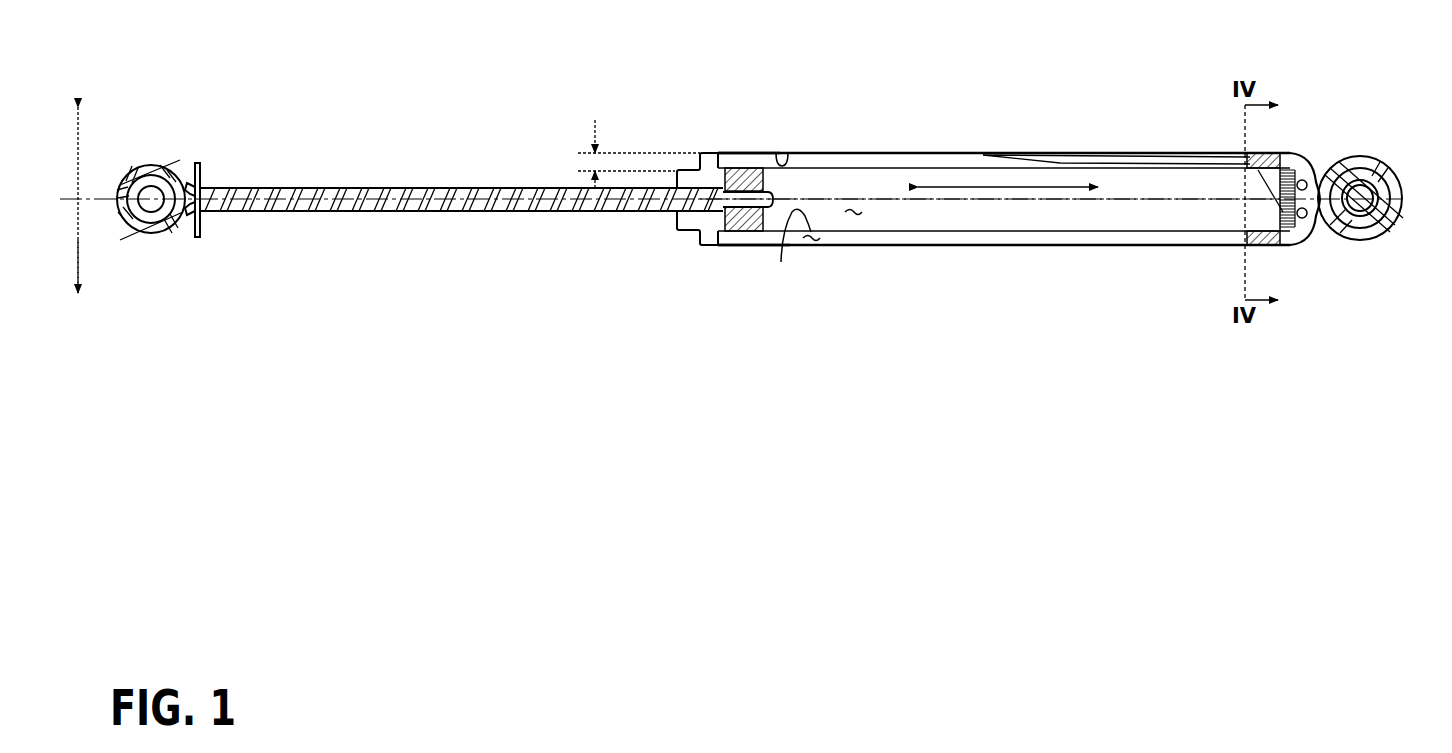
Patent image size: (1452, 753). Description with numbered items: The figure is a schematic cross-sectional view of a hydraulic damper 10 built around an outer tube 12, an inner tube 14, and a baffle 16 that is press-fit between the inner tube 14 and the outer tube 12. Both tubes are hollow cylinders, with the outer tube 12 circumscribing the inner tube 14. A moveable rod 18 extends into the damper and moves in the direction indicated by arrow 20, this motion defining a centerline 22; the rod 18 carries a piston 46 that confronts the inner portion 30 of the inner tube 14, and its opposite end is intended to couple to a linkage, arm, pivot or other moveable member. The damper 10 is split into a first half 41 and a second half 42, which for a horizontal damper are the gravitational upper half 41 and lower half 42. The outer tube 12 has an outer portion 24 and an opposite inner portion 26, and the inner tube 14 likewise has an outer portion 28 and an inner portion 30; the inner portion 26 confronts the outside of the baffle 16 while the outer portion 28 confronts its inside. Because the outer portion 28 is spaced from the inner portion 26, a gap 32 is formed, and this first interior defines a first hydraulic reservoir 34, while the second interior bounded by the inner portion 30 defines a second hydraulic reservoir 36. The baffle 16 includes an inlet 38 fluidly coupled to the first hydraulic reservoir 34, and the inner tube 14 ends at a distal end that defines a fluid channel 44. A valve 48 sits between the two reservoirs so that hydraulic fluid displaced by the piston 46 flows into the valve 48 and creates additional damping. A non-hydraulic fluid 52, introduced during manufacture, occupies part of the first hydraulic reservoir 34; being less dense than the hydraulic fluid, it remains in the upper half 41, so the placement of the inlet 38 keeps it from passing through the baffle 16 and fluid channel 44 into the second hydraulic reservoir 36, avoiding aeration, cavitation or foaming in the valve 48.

The hydraulic damper 10 is at (1188, 24).
The outer tube 12 is at (928, 150).
The inner tube 14 is at (735, 233).
The baffle 16 is at (1277, 148).
The moveable rod 18 is at (460, 230).
The arrow 20 is at (992, 186).
The centerline 22 is at (887, 198).
The outer portion of the outer tube 24 is at (760, 152).
The inner portion of the outer tube 26 is at (780, 152).
The outer portion of the inner tube 28 is at (765, 233).
The inner portion of the inner tube 30 is at (788, 250).
The gap 32 is at (595, 125).
The first hydraulic reservoir 34 is at (815, 240).
The second hydraulic reservoir 36 is at (858, 214).
The inlet 38 is at (1296, 228).
The first half 41 is at (80, 150).
The second half 42 is at (80, 250).
The fluid channel 44 is at (1304, 165).
The piston 46 is at (727, 216).
The valve 48 is at (1340, 170).
The non-hydraulic fluid 52 is at (1053, 157).